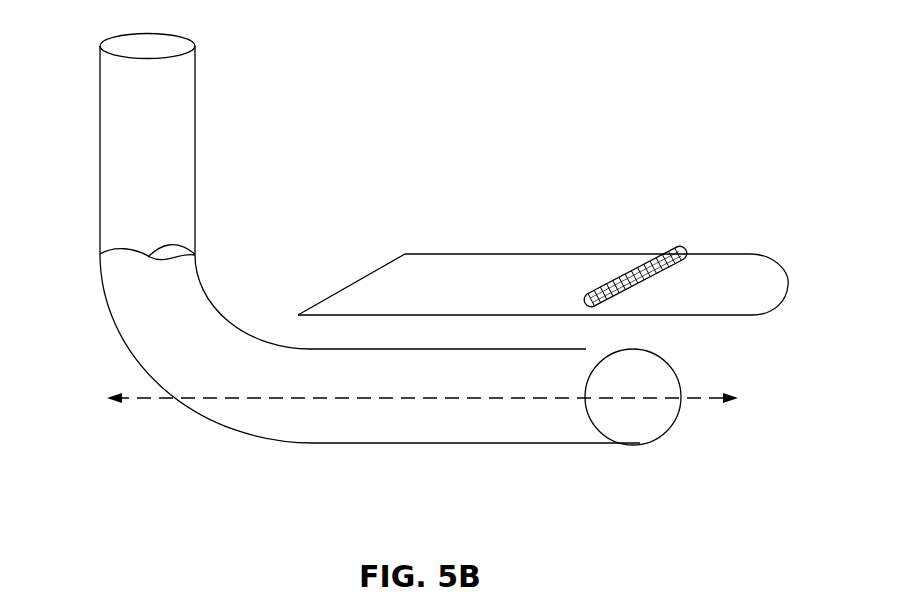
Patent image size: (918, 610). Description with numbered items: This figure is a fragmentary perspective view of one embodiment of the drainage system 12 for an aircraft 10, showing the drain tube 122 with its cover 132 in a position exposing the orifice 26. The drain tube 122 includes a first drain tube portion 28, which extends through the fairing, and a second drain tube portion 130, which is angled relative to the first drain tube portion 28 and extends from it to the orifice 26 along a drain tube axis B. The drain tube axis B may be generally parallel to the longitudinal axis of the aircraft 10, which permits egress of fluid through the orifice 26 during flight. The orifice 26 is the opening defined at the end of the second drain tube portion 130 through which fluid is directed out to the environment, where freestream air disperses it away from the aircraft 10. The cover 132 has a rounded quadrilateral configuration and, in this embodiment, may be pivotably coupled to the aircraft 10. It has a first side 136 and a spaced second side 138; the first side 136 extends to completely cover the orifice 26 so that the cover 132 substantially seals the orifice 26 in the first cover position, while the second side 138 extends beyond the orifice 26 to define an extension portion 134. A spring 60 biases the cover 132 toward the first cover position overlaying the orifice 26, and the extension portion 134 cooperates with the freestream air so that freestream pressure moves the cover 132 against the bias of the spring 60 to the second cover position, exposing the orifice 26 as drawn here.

The first drain tube portion 28 is at (100, 152).
The drain tube 122 is at (196, 437).
The second drain tube portion 130 is at (357, 447).
The orifice 26 is at (643, 446).
The drain tube axis B is at (698, 401).
The aircraft 10 is at (421, 243).
The drainage system 12 is at (548, 187).
The cover 132 is at (721, 242).
The extension portion 134 is at (748, 254).
The second side 138 is at (788, 290).
The spring 60 is at (662, 250).
The first side 136 is at (638, 268).